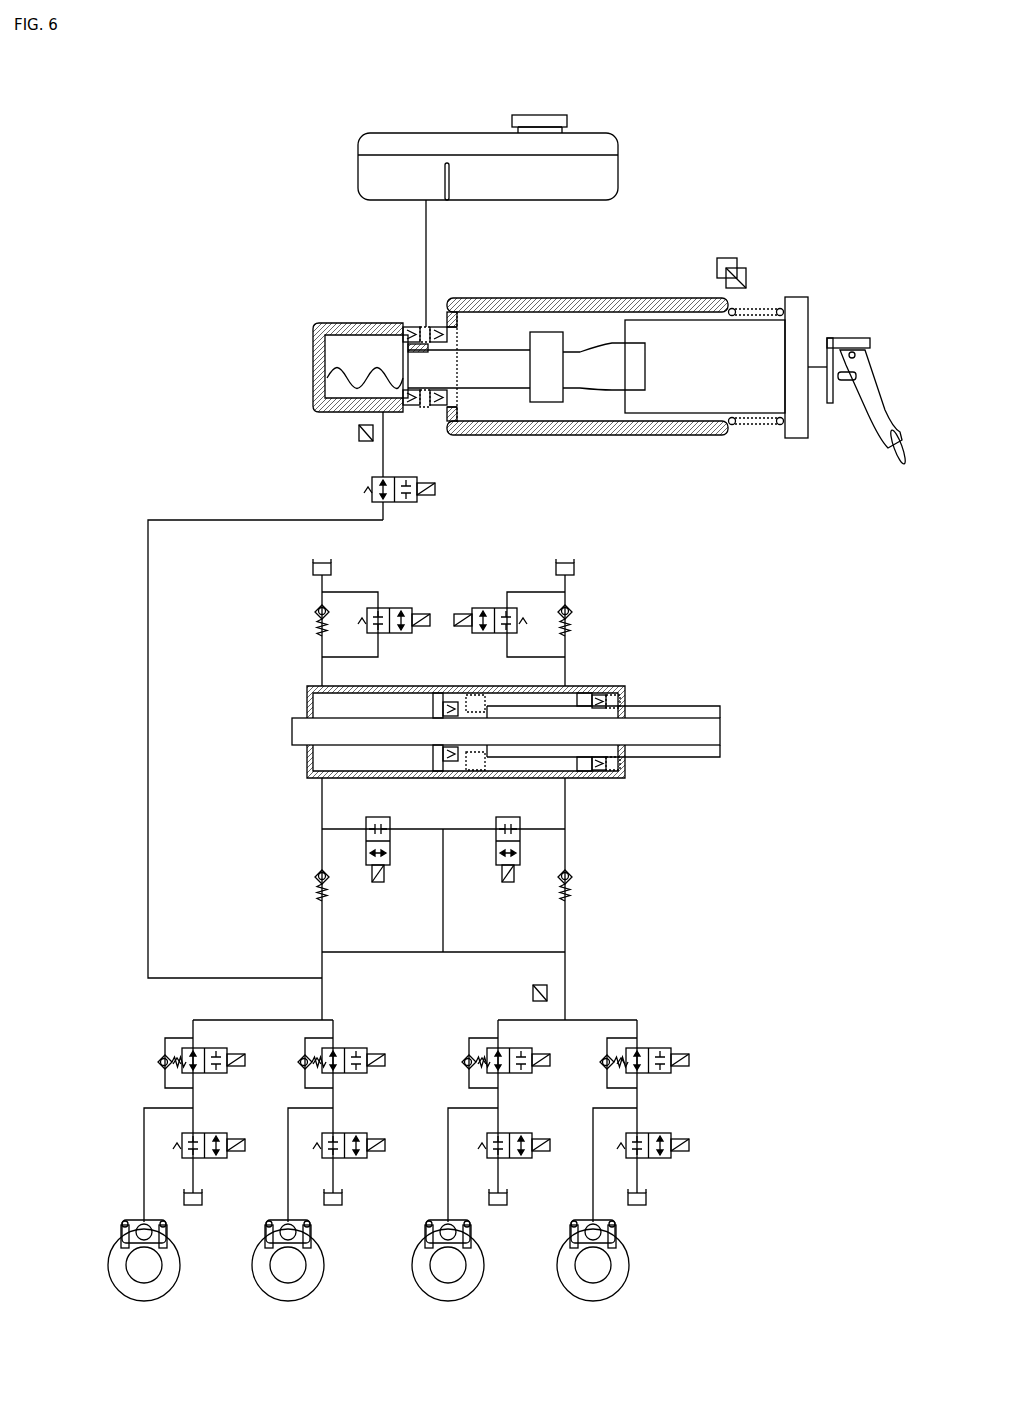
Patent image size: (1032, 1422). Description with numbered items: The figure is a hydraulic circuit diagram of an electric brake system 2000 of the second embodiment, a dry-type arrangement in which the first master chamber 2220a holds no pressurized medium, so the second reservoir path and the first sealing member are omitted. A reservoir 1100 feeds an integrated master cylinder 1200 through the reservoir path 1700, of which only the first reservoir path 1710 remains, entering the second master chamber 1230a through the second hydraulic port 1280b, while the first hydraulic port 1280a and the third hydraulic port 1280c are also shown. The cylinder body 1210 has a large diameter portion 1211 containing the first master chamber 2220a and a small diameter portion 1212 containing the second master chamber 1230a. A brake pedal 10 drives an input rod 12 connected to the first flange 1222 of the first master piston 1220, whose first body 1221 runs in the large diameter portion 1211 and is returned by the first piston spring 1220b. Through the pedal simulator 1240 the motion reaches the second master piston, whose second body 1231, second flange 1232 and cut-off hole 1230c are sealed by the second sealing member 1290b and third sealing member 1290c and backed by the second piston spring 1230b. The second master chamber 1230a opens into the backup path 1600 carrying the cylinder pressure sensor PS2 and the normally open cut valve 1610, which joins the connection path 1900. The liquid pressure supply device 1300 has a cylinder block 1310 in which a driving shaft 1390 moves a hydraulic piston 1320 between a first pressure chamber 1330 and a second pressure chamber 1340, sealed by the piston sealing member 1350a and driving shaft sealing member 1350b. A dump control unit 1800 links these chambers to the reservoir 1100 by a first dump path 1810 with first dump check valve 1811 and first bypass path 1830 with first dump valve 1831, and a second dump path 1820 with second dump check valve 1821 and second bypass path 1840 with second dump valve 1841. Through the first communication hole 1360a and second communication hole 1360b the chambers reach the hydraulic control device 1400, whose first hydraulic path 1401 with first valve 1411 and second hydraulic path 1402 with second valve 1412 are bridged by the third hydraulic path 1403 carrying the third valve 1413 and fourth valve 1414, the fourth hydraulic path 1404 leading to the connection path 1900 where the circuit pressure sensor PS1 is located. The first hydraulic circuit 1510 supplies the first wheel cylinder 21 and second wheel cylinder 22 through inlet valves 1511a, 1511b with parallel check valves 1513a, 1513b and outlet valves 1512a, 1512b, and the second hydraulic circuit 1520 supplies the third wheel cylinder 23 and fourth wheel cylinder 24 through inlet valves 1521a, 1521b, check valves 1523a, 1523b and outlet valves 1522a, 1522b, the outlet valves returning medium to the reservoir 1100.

The electric brake system 2000 is at (290, 89).
The reservoir 1100 is at (618, 163).
The reservoir path 1700 is at (345, 243).
The first reservoir path 1710 is at (424, 232).
The integrated master cylinder 1200 is at (280, 322).
The small diameter portion 1212 is at (321, 324).
The cylinder body 1210 is at (636, 437).
The first hydraulic port 1280a is at (540, 300).
The first master chamber 2220a is at (572, 420).
The second hydraulic port 1280b is at (412, 326).
The second sealing member 1290b is at (440, 326).
The third sealing member 1290c is at (405, 326).
The third hydraulic port 1280c is at (410, 408).
The second piston spring 1230b is at (335, 378).
The second master chamber 1230a is at (342, 400).
The cut-off hole 1230c is at (422, 356).
The second body 1231 is at (420, 386).
The second flange 1232 is at (540, 404).
The pedal simulator 1240 is at (598, 345).
The large diameter portion 1211 is at (640, 320).
The first master piston 1220 is at (820, 244).
The first body 1221 is at (765, 330).
The first flange 1222 is at (800, 305).
The first piston spring 1220b is at (735, 427).
The input rod 12 is at (823, 372).
The brake pedal 10 is at (905, 438).
The cylinder pressure sensor PS2 is at (358, 442).
The cut valve 1610 is at (412, 505).
The backup path 1600 is at (147, 592).
The dump control unit 1800 is at (628, 575).
The first dump path 1810 is at (320, 667).
The second dump path 1820 is at (566, 668).
The first dump check valve 1811 is at (314, 612).
The second dump check valve 1821 is at (572, 612).
The first bypass path 1830 is at (379, 592).
The first dump valve 1831 is at (410, 607).
The second bypass path 1840 is at (510, 592).
The second dump valve 1841 is at (478, 607).
The liquid pressure supply device 1300 is at (485, 480).
The cylinder block 1310 is at (307, 762).
The first pressure chamber 1330 is at (335, 706).
The driving shaft 1390 is at (722, 730).
The second pressure chamber 1340 is at (567, 781).
The hydraulic piston 1320 is at (437, 690).
The piston sealing member 1350a is at (470, 692).
The driving shaft sealing member 1350b is at (606, 692).
The hydraulic control device 1400 is at (673, 838).
The first communication hole 1360a is at (350, 788).
The second communication hole 1360b is at (563, 781).
The third hydraulic path 1403 is at (423, 829).
The first hydraulic path 1401 is at (320, 853).
The second hydraulic path 1402 is at (568, 853).
The fourth hydraulic path 1404 is at (445, 930).
The first valve 1411 is at (315, 877).
The second valve 1412 is at (572, 877).
The third valve 1413 is at (389, 868).
The fourth valve 1414 is at (500, 868).
The connection path 1900 is at (322, 1000).
The circuit pressure sensor PS1 is at (548, 998).
The second hydraulic circuit 1520 is at (110, 1053).
The inlet valve 1521b is at (207, 1046).
The check valve 1523b is at (158, 1065).
The outlet valve 1522b is at (207, 1132).
The inlet valve 1521a is at (367, 1030).
The check valve 1523a is at (303, 1056).
The outlet valve 1522a is at (367, 1115).
The first hydraulic circuit 1510 is at (696, 985).
The inlet valve 1511b is at (500, 1046).
The check valve 1513b is at (462, 1065).
The outlet valve 1512b is at (512, 1132).
The inlet valve 1511a is at (668, 1030).
The check valve 1513a is at (604, 1056).
The outlet valve 1512a is at (672, 1115).
The fourth wheel cylinder 24 is at (118, 1240).
The third wheel cylinder 23 is at (262, 1240).
The second wheel cylinder 22 is at (422, 1240).
The first wheel cylinder 21 is at (567, 1240).